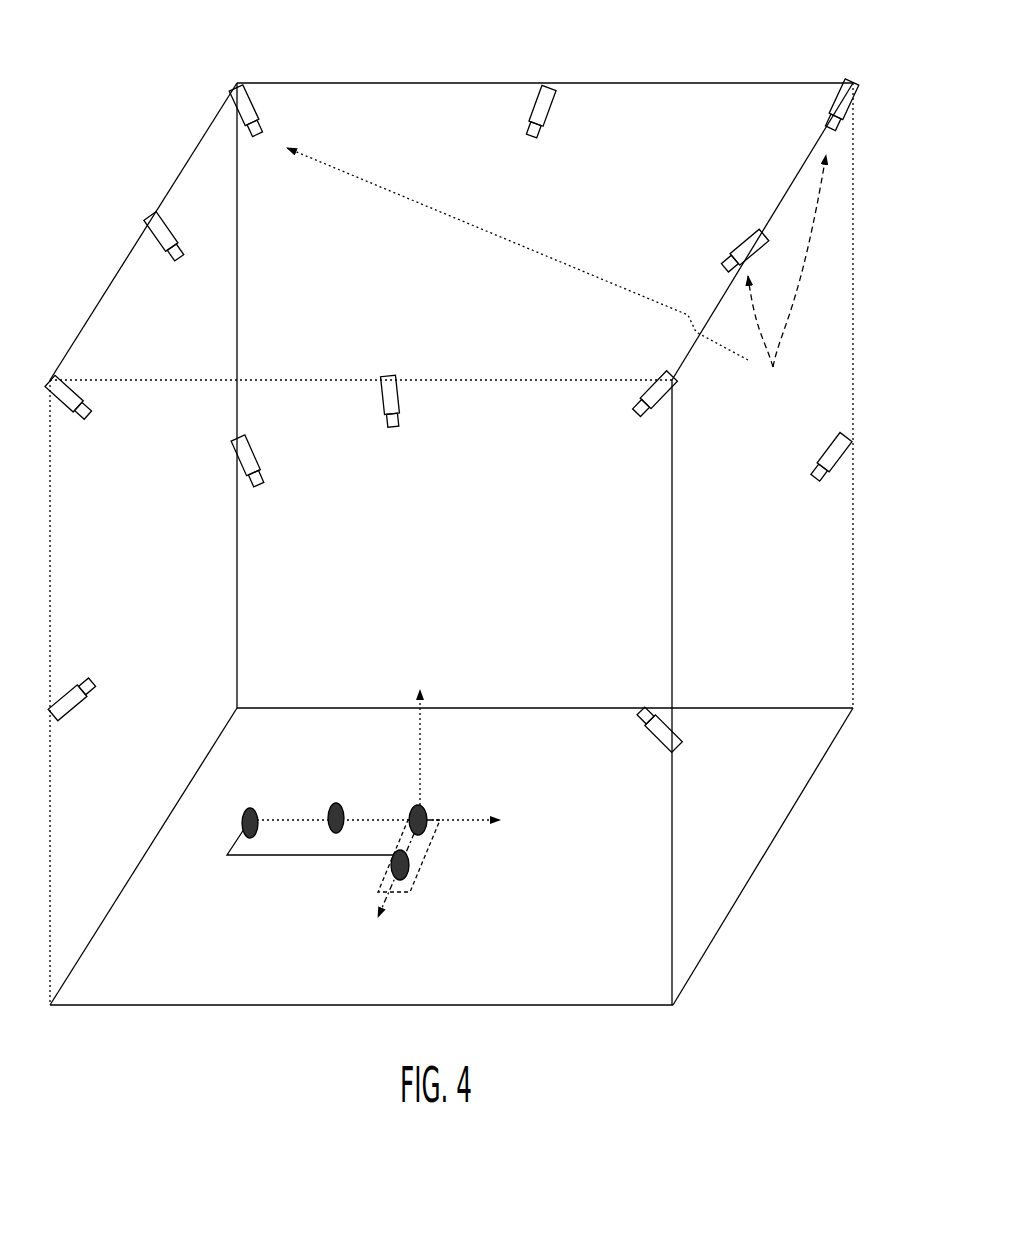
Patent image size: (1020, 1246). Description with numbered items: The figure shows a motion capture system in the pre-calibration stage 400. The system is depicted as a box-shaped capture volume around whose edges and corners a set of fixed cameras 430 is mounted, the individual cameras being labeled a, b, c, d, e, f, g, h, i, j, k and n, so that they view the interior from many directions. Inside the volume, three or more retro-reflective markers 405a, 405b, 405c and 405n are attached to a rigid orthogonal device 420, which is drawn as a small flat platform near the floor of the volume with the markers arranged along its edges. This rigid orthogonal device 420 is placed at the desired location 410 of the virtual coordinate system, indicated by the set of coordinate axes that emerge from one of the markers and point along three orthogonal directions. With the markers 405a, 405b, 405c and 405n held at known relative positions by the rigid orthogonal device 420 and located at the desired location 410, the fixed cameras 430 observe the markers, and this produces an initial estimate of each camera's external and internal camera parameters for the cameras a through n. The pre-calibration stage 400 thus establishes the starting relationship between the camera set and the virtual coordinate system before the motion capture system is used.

The pre-calibration stage 400 is at (758, 870).
The retro-reflective marker 405a is at (248, 806).
The retro-reflective marker 405b is at (326, 812).
The retro-reflective marker 405c is at (432, 812).
The retro-reflective marker 405n is at (407, 870).
The desired location of the virtual coordinate system 410 is at (468, 825).
The rigid orthogonal device 420 is at (283, 860).
The fixed camera 430 is at (690, 374).
The fixed camera a is at (654, 410).
The fixed camera b is at (744, 234).
The fixed camera c is at (836, 104).
The fixed camera d is at (532, 111).
The fixed camera e is at (240, 121).
The fixed camera f is at (164, 247).
The fixed camera g is at (69, 417).
The fixed camera h is at (72, 713).
The fixed camera i is at (251, 444).
The fixed camera j is at (401, 405).
The fixed camera k is at (659, 738).
The fixed camera n is at (831, 481).